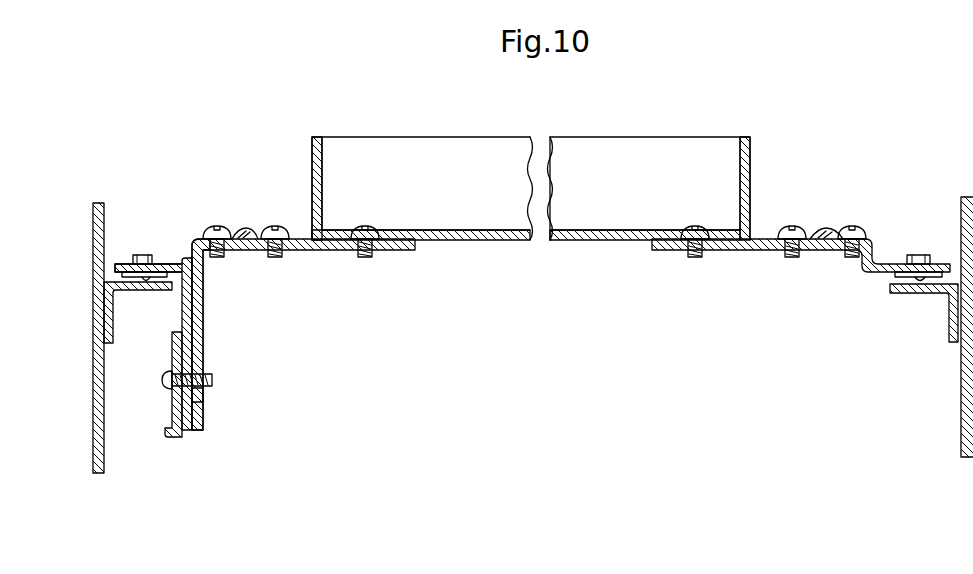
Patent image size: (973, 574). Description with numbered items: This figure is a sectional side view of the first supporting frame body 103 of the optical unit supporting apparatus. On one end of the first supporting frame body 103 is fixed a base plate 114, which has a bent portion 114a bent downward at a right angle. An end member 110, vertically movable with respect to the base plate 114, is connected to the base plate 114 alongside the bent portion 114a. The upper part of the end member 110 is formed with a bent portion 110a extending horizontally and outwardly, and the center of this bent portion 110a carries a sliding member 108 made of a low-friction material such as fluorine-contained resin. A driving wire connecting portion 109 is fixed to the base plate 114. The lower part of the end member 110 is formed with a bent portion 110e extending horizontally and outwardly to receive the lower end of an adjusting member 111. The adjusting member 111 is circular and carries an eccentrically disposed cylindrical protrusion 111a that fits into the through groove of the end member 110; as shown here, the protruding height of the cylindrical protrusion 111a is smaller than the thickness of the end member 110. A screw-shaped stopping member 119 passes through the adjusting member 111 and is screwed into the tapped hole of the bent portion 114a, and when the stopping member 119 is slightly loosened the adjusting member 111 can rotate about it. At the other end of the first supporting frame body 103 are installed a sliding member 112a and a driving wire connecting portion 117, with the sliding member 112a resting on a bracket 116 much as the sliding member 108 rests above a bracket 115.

The first supporting frame body 103 is at (752, 160).
The sliding member 108 is at (144, 255).
The driving wire connecting portion 109 is at (240, 226).
The end member 110 is at (185, 310).
The bent portion 110a is at (174, 262).
The bent portion 110e is at (180, 436).
The adjusting member 111 is at (173, 413).
The cylindrical protrusion 111a is at (204, 396).
The sliding member 112a is at (920, 255).
The base plate 114 is at (325, 251).
The bent portion 114a is at (204, 322).
The bracket 115 is at (128, 290).
The bracket 116 is at (926, 296).
The driving wire connecting portion 117 is at (826, 229).
The stopping member 119 is at (163, 386).